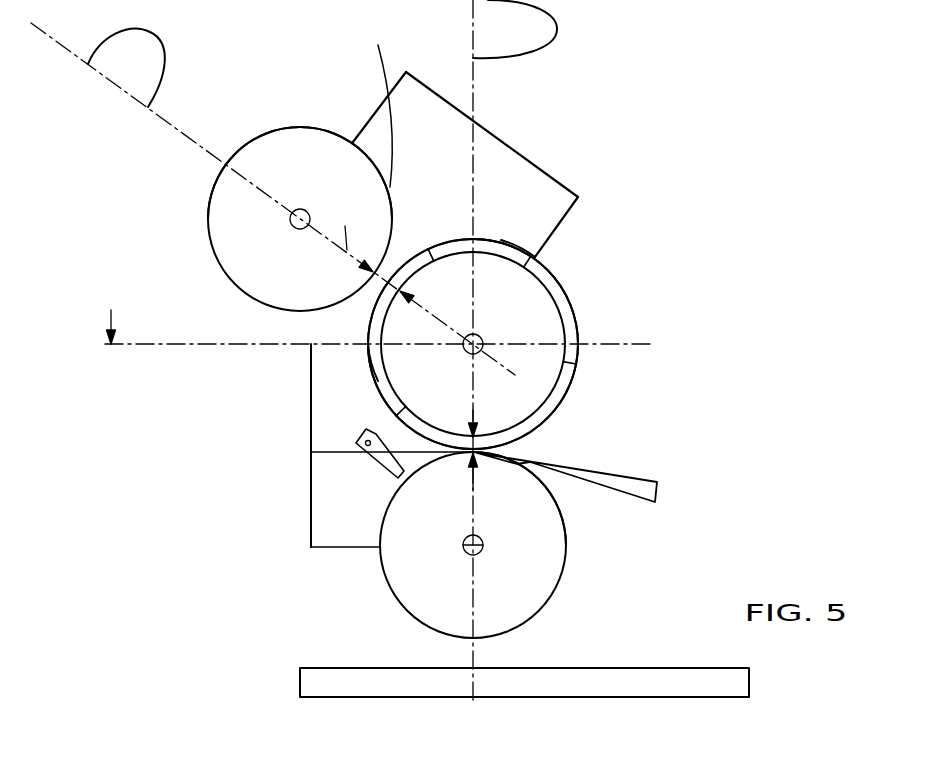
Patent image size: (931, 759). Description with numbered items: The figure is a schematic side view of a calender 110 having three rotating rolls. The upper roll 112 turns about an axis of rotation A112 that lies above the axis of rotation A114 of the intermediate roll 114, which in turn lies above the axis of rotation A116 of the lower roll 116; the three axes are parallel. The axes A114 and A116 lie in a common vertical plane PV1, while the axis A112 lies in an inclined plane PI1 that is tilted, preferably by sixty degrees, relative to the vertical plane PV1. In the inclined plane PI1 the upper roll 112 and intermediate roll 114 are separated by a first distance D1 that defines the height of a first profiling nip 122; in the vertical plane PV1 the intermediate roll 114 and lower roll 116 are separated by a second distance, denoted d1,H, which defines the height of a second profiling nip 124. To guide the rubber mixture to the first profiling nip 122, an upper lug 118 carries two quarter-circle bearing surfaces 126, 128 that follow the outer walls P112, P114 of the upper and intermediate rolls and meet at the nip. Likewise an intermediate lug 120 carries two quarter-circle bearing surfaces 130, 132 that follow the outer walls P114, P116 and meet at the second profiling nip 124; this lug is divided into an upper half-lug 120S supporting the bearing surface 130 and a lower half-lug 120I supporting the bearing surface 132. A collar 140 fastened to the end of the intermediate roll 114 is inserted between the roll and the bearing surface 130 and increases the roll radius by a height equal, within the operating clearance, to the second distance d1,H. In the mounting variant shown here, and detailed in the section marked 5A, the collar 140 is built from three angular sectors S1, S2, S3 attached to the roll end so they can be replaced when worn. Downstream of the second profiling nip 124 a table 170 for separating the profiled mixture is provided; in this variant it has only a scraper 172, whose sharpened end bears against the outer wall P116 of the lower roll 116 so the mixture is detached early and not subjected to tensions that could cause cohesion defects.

The calender 110 is at (203, 632).
The upper roll 112 is at (233, 201).
The axis of rotation of the upper roll A112 is at (294, 235).
The outer wall of the upper roll P112 is at (286, 128).
The inclined plane PI1 is at (126, 68).
The vertical plane PV1 is at (515, 29).
The upper lug 118 is at (512, 157).
The quarter-circle bearing surface 126 is at (378, 103).
The intermediate roll 114 is at (548, 327).
The axis of rotation of the intermediate roll A114 is at (450, 357).
The outer wall of the intermediate roll P114 is at (557, 288).
The quarter-circle bearing surface 128 is at (501, 240).
The angular sector S1 is at (377, 328).
The angular sector S2 is at (515, 255).
The angular sector S3 is at (547, 412).
The quarter-circle bearing surface 130 is at (373, 380).
The collar 140 is at (578, 370).
The first distance D1 is at (379, 259).
The first profiling nip 122 is at (358, 305).
The section line 5A is at (125, 318).
The intermediate lug 120 is at (329, 463).
The upper half-lug 120S is at (327, 430).
The lower half-lug 120I is at (327, 535).
The quarter-circle bearing surface 132 is at (382, 528).
The lower roll 116 is at (537, 583).
The axis of rotation of the lower roll A116 is at (449, 557).
The outer wall of the lower roll P116 is at (567, 533).
The scraper 172 is at (633, 483).
The table for separating the profiled mixture 170 is at (657, 495).
The second profiling nip 124 is at (537, 450).
The second distance and collar height d1,H is at (474, 480).